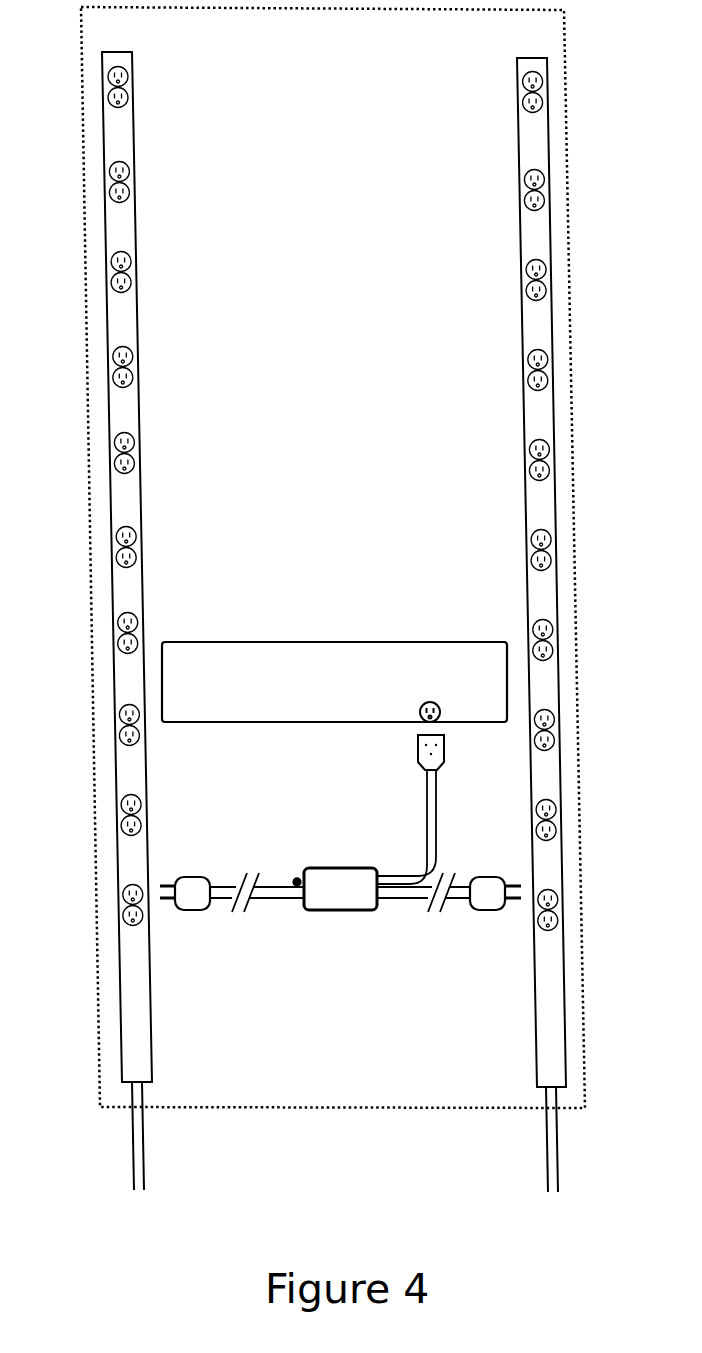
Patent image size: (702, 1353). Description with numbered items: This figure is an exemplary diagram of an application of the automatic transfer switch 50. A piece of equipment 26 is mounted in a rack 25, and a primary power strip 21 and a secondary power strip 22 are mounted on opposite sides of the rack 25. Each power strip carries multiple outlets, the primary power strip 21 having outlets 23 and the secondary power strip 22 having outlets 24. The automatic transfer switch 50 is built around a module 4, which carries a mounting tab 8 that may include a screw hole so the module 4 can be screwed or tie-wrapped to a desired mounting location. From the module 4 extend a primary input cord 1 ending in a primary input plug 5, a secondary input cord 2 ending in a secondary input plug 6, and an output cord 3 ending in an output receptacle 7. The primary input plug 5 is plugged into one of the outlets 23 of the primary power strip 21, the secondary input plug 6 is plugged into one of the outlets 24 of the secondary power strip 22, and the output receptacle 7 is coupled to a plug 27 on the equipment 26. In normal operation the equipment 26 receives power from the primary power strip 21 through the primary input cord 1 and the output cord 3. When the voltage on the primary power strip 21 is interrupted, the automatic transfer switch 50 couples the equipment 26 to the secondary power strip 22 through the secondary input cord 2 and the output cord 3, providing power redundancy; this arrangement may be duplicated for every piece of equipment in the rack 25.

The primary input cord 1 is at (268, 905).
The secondary input cord 2 is at (415, 905).
The output cord 3 is at (427, 795).
The module 4 is at (343, 885).
The primary input plug 5 is at (190, 905).
The secondary input plug 6 is at (490, 905).
The output receptacle 7 is at (415, 760).
The mounting tab 8 is at (297, 880).
The primary power strip 21 is at (137, 987).
The secondary power strip 22 is at (545, 988).
The outlets of primary power strip 23 is at (138, 533).
The outlets of secondary power strip 24 is at (525, 533).
The rack 25 is at (331, 248).
The equipment 26 is at (283, 703).
The plug on the equipment 27 is at (418, 702).
The automatic transfer switch 50 is at (342, 965).